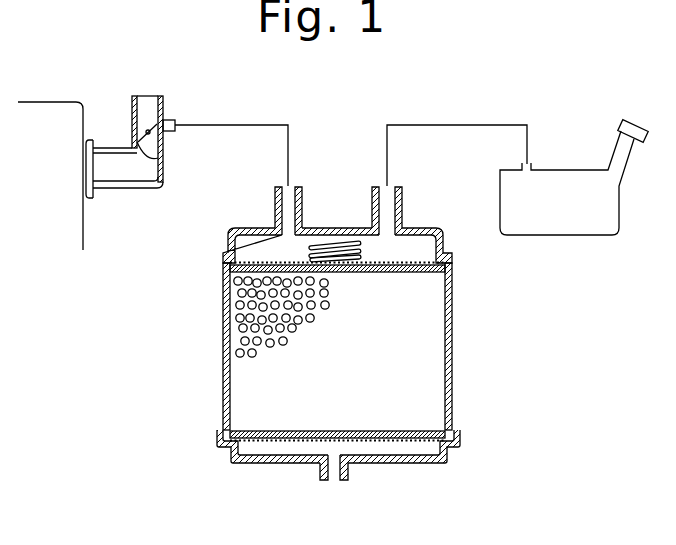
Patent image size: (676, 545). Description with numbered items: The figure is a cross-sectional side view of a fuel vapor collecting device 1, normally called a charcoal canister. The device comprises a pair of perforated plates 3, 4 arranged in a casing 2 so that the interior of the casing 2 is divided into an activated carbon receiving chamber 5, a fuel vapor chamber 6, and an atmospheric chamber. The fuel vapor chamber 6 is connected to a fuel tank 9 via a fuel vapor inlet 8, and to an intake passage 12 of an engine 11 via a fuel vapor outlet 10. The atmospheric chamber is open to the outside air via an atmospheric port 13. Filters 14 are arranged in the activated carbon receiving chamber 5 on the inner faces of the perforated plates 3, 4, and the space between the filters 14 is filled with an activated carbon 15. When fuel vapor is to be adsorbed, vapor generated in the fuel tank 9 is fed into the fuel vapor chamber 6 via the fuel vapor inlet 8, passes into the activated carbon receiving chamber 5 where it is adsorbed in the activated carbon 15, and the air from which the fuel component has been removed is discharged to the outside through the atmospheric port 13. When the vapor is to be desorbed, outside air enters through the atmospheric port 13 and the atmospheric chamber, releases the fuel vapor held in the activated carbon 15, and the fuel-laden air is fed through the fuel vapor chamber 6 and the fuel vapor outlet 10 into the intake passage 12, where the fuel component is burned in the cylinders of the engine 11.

The fuel vapor collecting device 1 is at (343, 353).
The casing 2 is at (224, 378).
The perforated plate 3 is at (441, 256).
The perforated plate 4 is at (252, 450).
The activated carbon receiving chamber 5 is at (430, 381).
The fuel vapor chamber 6 is at (243, 246).
The fuel vapor inlet 8 is at (392, 208).
The fuel tank 9 is at (573, 225).
The fuel vapor outlet 10 is at (278, 200).
The engine 11 is at (84, 240).
The intake passage 12 is at (150, 112).
The atmospheric port 13 is at (334, 472).
The filter 14 is at (433, 268).
The activated carbon 15 is at (228, 296).